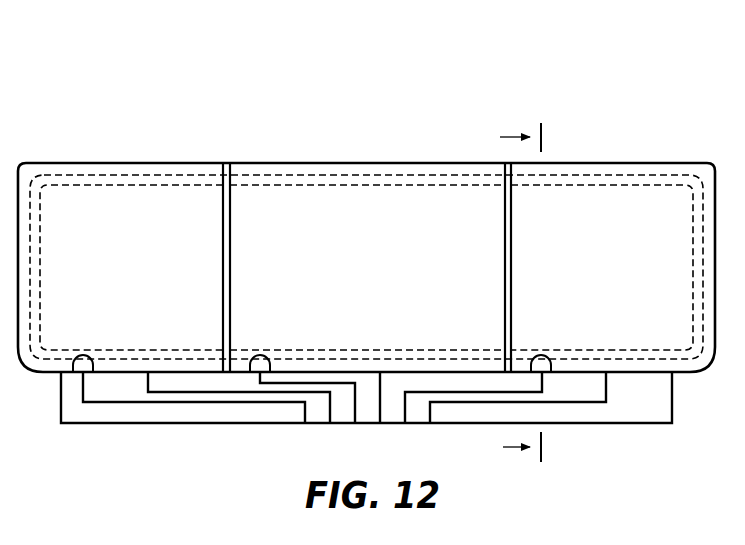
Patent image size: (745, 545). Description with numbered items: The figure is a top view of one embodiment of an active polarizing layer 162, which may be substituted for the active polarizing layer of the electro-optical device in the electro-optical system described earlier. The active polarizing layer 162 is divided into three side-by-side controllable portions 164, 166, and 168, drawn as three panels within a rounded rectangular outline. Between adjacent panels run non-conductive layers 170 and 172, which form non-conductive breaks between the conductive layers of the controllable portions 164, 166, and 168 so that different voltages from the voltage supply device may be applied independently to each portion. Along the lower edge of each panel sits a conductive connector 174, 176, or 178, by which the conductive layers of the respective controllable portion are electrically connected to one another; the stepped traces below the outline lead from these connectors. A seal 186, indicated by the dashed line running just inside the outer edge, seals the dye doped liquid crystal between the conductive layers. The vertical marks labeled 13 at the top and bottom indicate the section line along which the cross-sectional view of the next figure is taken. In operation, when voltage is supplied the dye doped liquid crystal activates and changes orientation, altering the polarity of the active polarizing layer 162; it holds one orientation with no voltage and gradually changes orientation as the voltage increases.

The active polarizing layer 162 is at (162, 72).
The controllable portion 164 is at (112, 205).
The controllable portion 166 is at (364, 207).
The controllable portion 168 is at (646, 205).
The non-conductive layer 170 is at (222, 266).
The non-conductive layer 172 is at (504, 266).
The conductive connector 174 is at (88, 367).
The conductive connector 176 is at (264, 367).
The conductive connector 178 is at (546, 367).
The seal 186 is at (567, 183).
The section line 13- 13 is at (509, 293).